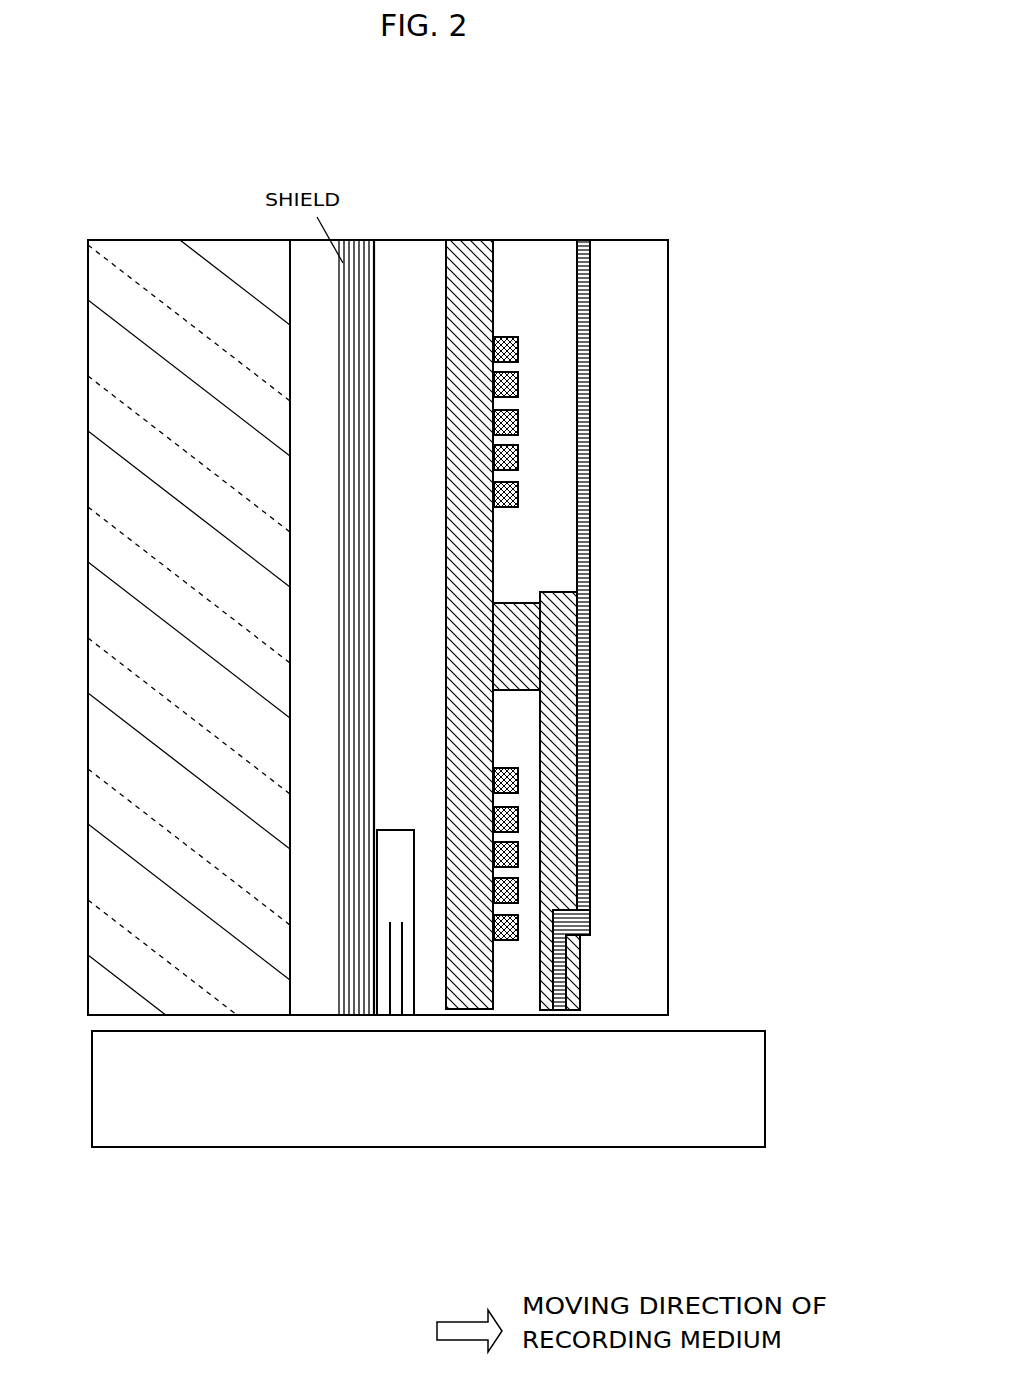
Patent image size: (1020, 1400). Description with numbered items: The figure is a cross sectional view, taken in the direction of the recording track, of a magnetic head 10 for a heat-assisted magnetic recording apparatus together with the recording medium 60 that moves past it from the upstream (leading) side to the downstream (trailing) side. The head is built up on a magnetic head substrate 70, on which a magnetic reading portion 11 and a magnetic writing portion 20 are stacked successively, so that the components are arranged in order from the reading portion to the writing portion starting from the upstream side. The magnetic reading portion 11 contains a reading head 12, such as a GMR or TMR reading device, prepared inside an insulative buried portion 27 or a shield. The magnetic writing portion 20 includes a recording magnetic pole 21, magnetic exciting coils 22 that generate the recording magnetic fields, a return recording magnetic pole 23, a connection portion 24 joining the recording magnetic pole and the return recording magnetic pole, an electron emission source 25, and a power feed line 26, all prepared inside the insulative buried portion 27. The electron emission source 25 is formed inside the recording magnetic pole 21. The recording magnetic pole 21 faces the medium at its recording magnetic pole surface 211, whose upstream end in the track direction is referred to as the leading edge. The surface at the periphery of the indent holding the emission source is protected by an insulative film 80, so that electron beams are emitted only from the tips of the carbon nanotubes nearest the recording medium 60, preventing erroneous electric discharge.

The magnetic head 10 is at (378, 569).
The magnetic reading portion 11 is at (372, 1079).
The reading head 12 is at (388, 1017).
The magnetic writing portion 20 is at (595, 1125).
The recording magnetic pole 21 is at (552, 643).
The magnetic exciting coils 22 is at (518, 482).
The return recording magnetic pole 23 is at (463, 575).
The connection portion 24 is at (513, 622).
The electron emission source 25 is at (584, 938).
The power feed line 26 is at (589, 453).
The insulative buried portion 27 is at (325, 288).
The recording medium 60 is at (197, 1133).
The magnetic head substrate 70 is at (181, 258).
The insulative film 80 is at (495, 1010).
The recording magnetic pole surface 211 is at (548, 1015).